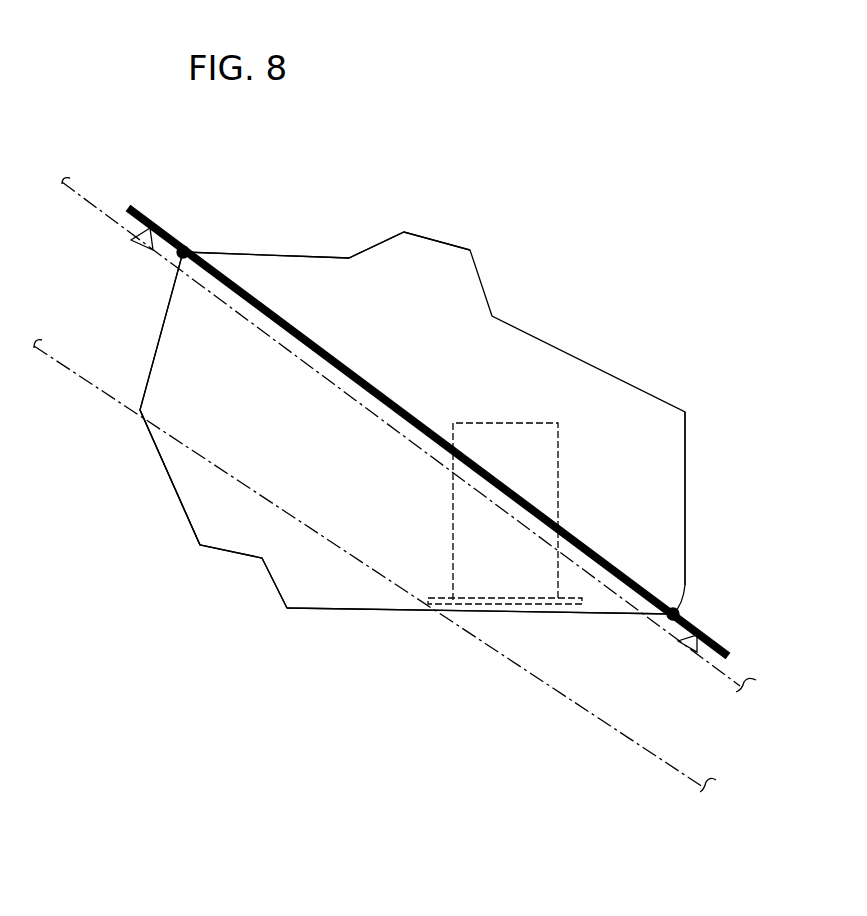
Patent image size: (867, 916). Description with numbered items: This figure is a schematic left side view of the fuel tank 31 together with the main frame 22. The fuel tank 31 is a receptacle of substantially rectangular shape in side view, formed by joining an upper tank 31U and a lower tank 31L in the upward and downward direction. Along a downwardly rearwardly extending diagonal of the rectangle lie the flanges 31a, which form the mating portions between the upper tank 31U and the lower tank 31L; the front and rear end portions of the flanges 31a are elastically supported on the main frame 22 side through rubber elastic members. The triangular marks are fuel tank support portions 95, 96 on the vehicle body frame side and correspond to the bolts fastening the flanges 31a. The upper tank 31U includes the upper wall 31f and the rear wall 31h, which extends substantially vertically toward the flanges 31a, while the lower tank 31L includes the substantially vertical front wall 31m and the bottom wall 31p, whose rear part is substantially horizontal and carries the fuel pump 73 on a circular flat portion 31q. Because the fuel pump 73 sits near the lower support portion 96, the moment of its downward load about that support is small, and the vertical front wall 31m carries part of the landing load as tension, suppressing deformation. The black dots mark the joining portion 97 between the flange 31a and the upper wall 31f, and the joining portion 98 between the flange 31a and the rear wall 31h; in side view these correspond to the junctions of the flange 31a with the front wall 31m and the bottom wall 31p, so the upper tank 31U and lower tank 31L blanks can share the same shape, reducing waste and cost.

The main frame 22 is at (86, 192).
The fuel tank 31 is at (585, 262).
The upper tank 31U is at (375, 242).
The upper wall 31f is at (298, 257).
The rear wall 31h is at (687, 481).
The front wall 31m is at (155, 446).
The lower tank 31L is at (190, 526).
The bottom wall 31p is at (405, 614).
The flat portion 31q is at (545, 606).
The flange 31a is at (400, 414).
The fuel pump 73 is at (531, 420).
The fuel tank support portion 95 is at (140, 234).
The fuel tank support portion 96 is at (697, 647).
The joining portion 97 is at (186, 248).
The joining portion 98 is at (678, 612).